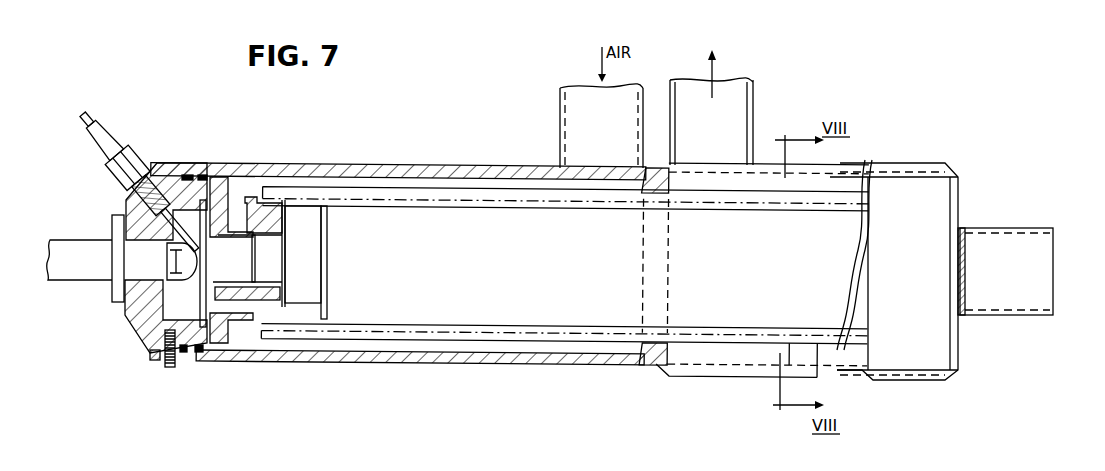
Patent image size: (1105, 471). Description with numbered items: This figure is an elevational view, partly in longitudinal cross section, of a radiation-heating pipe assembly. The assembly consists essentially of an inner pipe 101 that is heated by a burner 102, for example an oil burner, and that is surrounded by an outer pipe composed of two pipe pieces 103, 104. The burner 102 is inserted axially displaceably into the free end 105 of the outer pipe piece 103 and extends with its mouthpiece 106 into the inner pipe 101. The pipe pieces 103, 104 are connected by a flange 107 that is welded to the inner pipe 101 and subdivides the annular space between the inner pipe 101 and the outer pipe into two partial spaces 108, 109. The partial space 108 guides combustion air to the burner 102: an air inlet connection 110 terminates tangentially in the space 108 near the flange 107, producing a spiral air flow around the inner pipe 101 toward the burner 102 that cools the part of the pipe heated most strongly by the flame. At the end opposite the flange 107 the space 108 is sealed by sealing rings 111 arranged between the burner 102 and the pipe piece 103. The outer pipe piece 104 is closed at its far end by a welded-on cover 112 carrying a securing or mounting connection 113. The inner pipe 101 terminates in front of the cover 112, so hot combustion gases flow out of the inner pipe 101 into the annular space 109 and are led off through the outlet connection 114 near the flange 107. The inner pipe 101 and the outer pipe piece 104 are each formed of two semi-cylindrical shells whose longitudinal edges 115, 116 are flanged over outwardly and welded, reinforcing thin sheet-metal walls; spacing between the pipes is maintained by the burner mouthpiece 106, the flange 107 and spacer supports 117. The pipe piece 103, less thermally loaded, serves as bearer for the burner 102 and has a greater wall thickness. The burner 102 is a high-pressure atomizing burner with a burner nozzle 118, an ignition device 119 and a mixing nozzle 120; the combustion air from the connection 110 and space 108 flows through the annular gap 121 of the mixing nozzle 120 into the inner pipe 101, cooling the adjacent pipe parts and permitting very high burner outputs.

The inner pipe 101 is at (420, 330).
The burner 102 is at (122, 338).
The outer pipe piece 103 is at (576, 362).
The outer pipe piece 104 is at (872, 380).
The free end 105 is at (152, 361).
The mouthpiece 106 is at (254, 197).
The flange 107 is at (659, 364).
The partial space 108 is at (327, 186).
The partial space 109 is at (730, 358).
The air inlet connection 110 is at (578, 138).
The sealing rings 111 is at (199, 355).
The cover 112 is at (958, 193).
The securing or mounting connection 113 is at (1020, 246).
The outlet connection 114 is at (731, 122).
The longitudinal edges 115 is at (501, 343).
The longitudinal edges 116 is at (928, 380).
The spacer supports 117 is at (800, 352).
The burner nozzle 118 is at (177, 274).
The ignition device 119 is at (112, 131).
The mixing nozzle 120 is at (240, 265).
The annular gap 121 is at (254, 232).